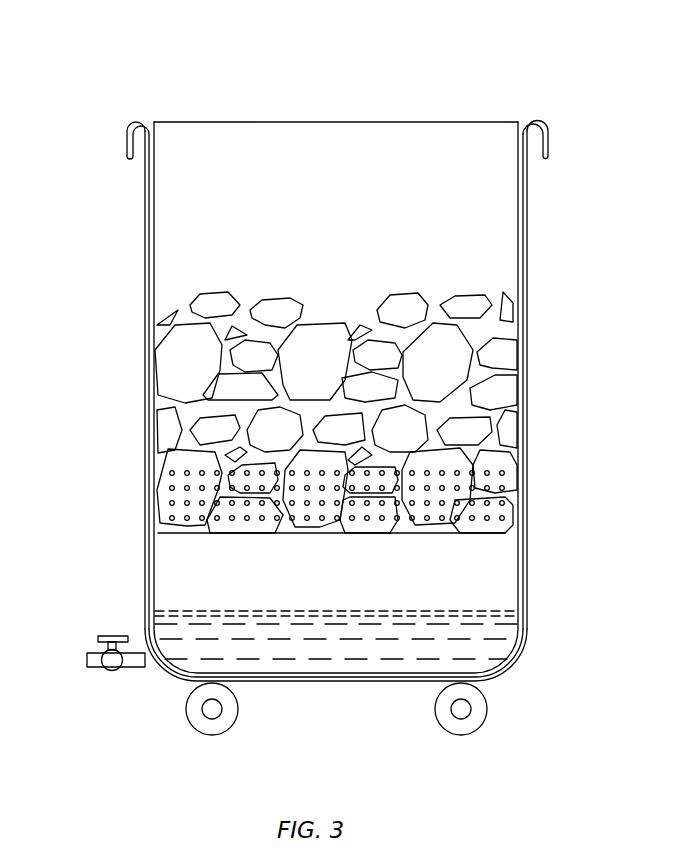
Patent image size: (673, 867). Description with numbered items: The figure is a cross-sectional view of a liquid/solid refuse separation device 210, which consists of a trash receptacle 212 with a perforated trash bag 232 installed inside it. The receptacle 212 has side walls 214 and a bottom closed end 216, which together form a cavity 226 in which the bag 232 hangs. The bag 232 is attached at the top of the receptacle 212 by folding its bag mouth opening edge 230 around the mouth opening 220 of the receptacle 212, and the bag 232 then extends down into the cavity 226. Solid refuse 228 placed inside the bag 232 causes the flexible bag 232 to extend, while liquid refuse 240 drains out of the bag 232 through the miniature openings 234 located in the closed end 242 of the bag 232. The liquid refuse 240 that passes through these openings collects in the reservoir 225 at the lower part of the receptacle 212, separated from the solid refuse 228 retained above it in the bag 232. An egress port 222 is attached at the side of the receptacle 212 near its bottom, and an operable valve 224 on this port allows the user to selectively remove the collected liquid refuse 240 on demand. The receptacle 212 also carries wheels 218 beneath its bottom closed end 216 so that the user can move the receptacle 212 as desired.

The separation device 210 is at (97, 85).
The trash receptacle 212 is at (150, 212).
The side walls 214 is at (527, 248).
The bottom closed end 216 is at (172, 677).
The wheels 218 is at (437, 722).
The mouth opening 220 is at (503, 122).
The egress port 222 is at (87, 660).
The operable valve 224 is at (110, 635).
The reservoir 225 is at (603, 550).
The cavity 226 is at (470, 576).
The solid refuse 228 is at (323, 320).
The bag mouth opening edge 230 is at (550, 140).
The bag 232 is at (520, 290).
The miniature openings 234 is at (442, 473).
The liquid refuse 240 is at (500, 648).
The closed end 242 is at (200, 533).